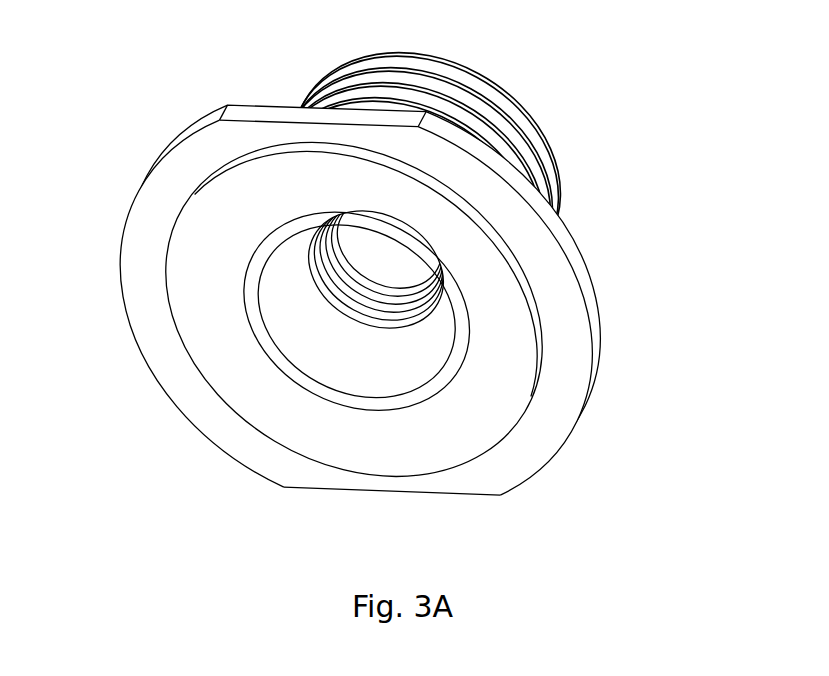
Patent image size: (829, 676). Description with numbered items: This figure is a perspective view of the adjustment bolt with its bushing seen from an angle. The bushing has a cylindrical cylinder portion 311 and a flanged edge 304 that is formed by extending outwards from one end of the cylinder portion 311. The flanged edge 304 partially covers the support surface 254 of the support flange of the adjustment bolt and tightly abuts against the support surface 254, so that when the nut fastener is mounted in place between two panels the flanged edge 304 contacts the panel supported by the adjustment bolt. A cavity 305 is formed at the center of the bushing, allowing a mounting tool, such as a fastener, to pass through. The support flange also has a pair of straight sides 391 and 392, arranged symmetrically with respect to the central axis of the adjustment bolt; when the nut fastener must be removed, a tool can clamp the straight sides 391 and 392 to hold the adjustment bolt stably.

The support surface 254 is at (577, 385).
The flanged edge 304 is at (485, 423).
The cavity 305 is at (317, 358).
The cylinder portion 311 is at (310, 315).
The straight side 391 is at (273, 115).
The straight side 392 is at (348, 490).